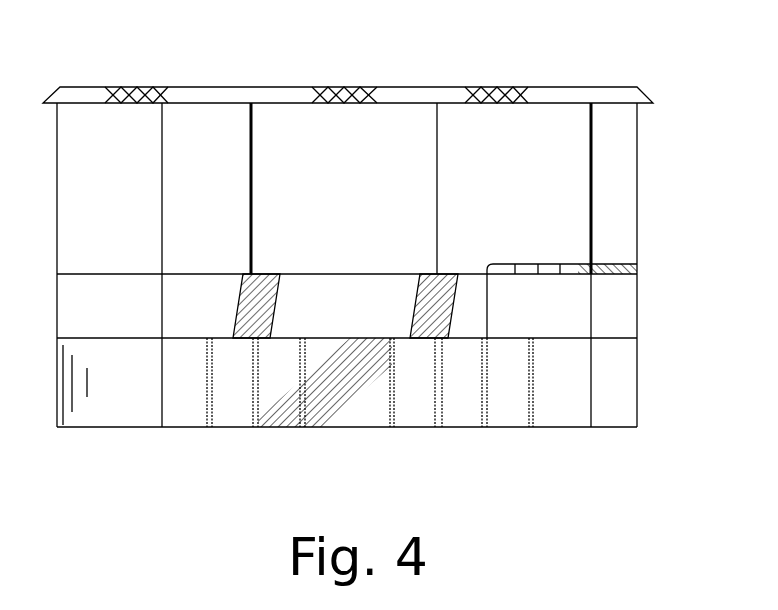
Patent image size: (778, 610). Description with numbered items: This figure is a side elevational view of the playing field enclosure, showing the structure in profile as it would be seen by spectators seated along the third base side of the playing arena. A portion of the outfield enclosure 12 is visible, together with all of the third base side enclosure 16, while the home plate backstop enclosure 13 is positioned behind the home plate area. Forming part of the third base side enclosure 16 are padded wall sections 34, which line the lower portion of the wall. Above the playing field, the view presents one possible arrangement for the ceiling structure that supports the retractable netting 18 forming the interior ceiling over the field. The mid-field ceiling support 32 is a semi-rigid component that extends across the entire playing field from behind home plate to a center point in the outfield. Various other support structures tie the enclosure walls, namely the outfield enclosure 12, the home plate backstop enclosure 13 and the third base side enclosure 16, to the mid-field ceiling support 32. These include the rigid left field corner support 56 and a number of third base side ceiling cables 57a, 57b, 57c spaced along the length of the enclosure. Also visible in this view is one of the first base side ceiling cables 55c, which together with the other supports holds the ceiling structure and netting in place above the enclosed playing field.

The mid-field ceiling support 32 is at (250, 87).
The retractable netting 18 is at (457, 105).
The outfield enclosure 12 is at (146, 274).
The rigid left field corner support 56 is at (160, 208).
The third base side ceiling cable 57a is at (250, 208).
The third base side ceiling cable 57b is at (436, 208).
The third base side ceiling cable 57c is at (588, 245).
The first base side ceiling cable 55c is at (640, 208).
The third base side enclosure 16 is at (400, 273).
The home plate backstop enclosure 13 is at (637, 293).
The padded wall sections 34 is at (187, 420).